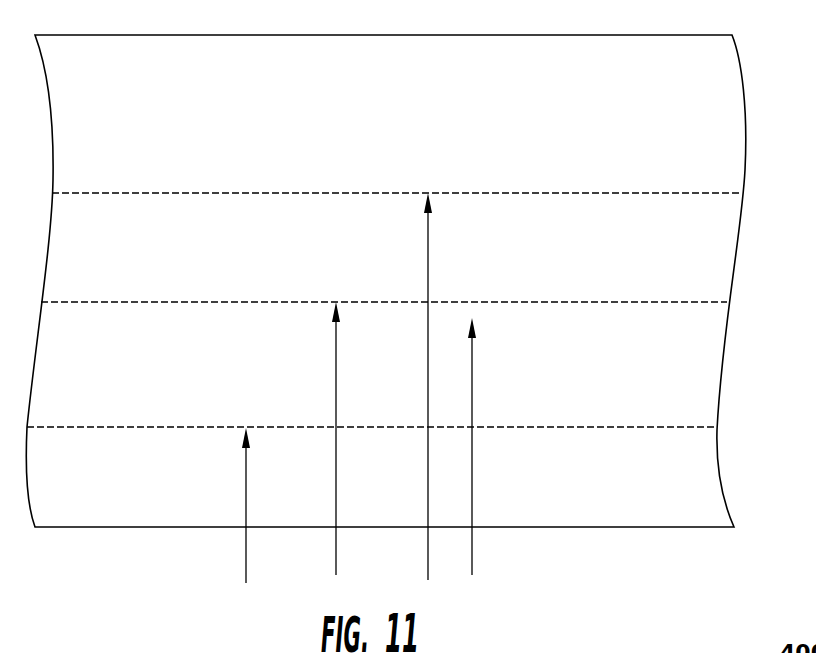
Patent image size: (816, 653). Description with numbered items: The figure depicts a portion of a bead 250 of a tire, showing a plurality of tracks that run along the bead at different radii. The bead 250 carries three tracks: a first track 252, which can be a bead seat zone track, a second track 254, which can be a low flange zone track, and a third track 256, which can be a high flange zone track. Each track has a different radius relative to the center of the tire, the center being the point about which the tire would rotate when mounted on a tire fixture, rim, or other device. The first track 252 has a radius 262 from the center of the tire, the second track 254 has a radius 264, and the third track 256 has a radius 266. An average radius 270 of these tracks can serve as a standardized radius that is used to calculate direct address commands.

The bead 250 is at (717, 47).
The first track 252 is at (95, 427).
The second track 254 is at (91, 302).
The third track 256 is at (88, 193).
The radius 262 is at (244, 484).
The radius 264 is at (335, 482).
The radius 266 is at (427, 482).
The average radius 270 is at (508, 446).